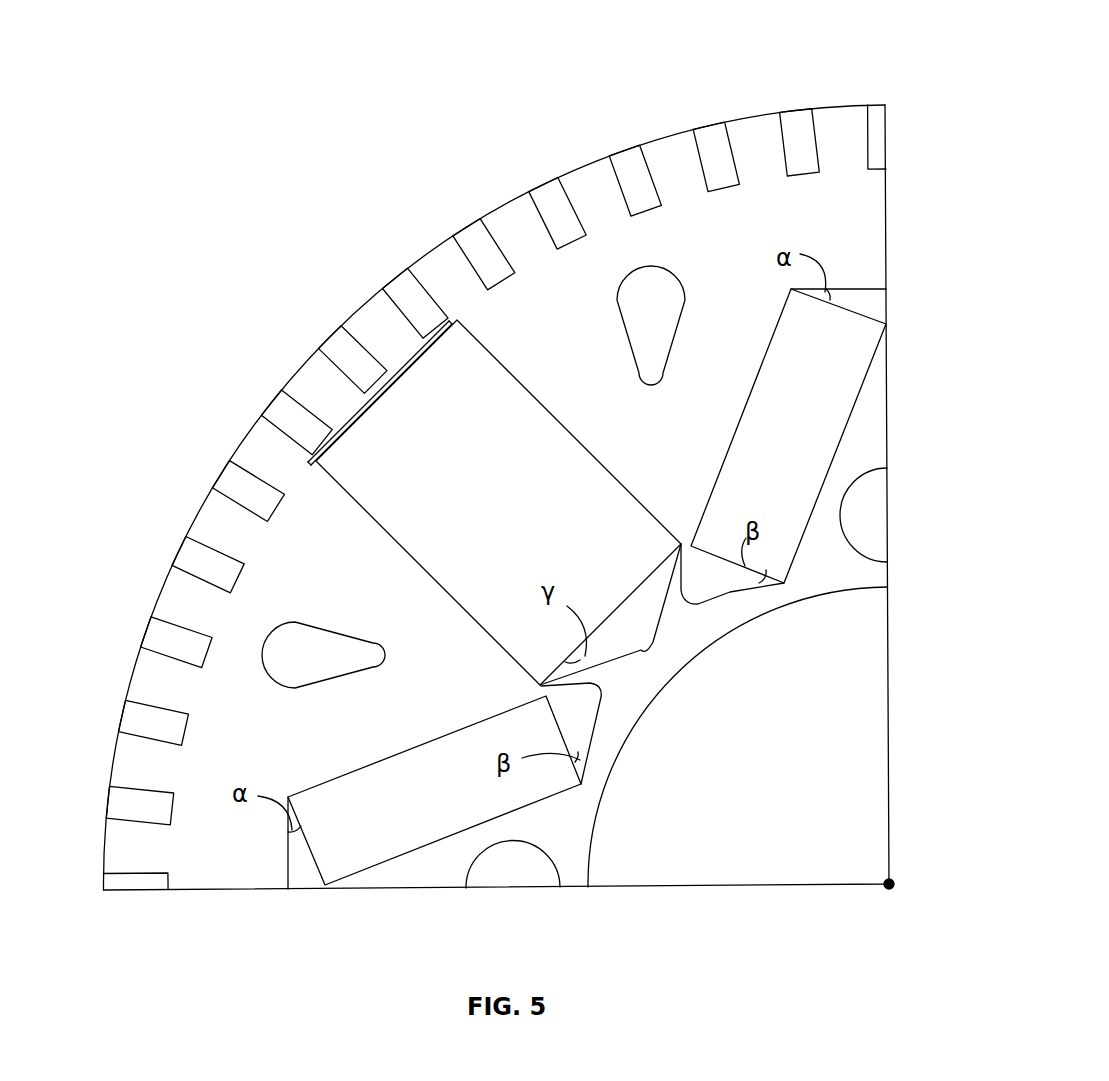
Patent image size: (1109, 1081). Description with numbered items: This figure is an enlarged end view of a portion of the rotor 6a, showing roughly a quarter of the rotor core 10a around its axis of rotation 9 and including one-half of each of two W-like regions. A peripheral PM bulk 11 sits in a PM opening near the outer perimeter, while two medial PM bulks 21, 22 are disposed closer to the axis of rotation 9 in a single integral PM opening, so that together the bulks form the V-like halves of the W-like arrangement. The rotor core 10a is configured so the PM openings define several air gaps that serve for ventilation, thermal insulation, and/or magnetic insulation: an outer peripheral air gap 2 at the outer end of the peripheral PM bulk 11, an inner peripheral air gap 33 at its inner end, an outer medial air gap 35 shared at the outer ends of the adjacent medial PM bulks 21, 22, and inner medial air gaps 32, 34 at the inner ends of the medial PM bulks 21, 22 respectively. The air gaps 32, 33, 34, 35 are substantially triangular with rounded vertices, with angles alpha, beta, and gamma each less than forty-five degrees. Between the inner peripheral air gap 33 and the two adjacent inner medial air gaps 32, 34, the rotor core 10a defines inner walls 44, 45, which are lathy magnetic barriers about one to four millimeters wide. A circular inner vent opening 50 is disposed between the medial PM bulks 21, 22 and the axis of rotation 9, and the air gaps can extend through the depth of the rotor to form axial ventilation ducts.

The rotor 6a is at (315, 180).
The rotor core 10a is at (583, 180).
The outer peripheral air gap 2 is at (352, 402).
The peripheral PM bulk 11 is at (503, 510).
The medial PM bulk 21 is at (801, 410).
The medial PM bulk 22 is at (447, 796).
The outer medial air gap 35 is at (853, 292).
The inner wall 45 is at (690, 543).
The inner medial air gap 32 is at (712, 598).
The inner peripheral air gap 33 is at (638, 650).
The inner medial air gap 34 is at (598, 722).
The inner wall 44 is at (565, 684).
The inner vent opening 50 is at (486, 878).
The axis of rotation 9 is at (888, 905).